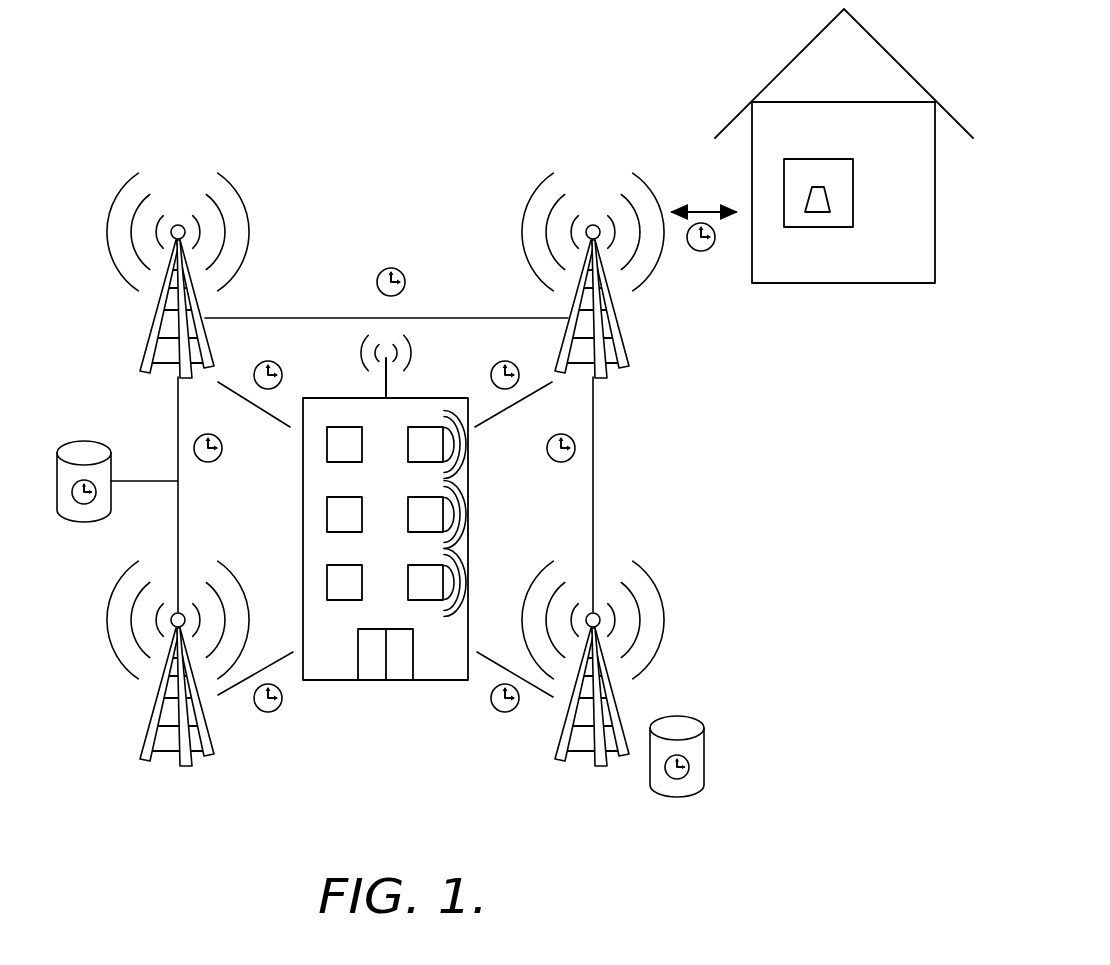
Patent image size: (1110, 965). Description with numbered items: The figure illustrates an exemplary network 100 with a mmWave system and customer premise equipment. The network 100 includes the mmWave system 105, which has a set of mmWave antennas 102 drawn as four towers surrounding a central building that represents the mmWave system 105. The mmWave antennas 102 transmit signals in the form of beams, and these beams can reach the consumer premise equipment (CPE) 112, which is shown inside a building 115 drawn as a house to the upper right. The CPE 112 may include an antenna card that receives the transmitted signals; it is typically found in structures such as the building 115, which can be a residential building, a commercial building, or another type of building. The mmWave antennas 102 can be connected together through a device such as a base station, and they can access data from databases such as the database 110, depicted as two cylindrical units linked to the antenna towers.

The network 100 is at (497, 134).
The mmWave antennas 102 is at (154, 326).
The mmWave system 105 is at (392, 778).
The database 110 is at (87, 440).
The consumer premise equipment (CPE) 112 is at (827, 203).
The building 115 is at (858, 284).